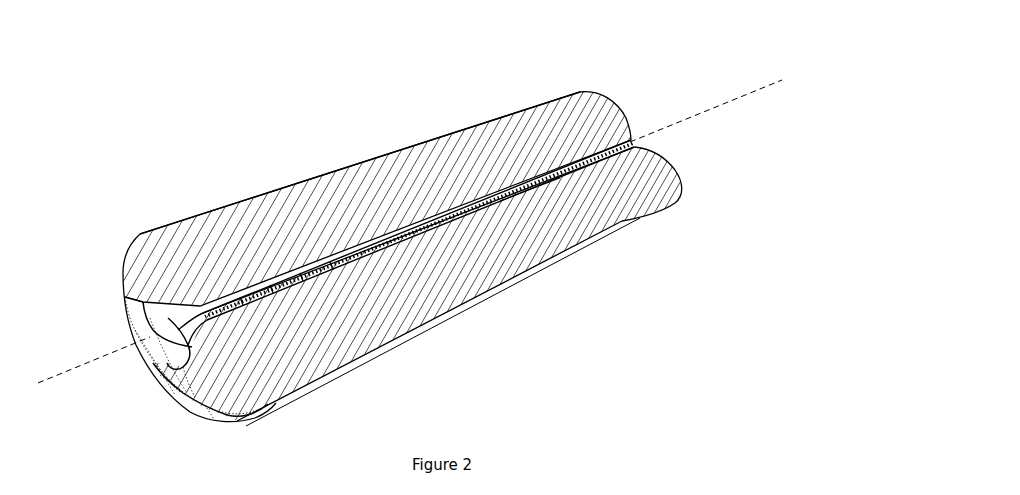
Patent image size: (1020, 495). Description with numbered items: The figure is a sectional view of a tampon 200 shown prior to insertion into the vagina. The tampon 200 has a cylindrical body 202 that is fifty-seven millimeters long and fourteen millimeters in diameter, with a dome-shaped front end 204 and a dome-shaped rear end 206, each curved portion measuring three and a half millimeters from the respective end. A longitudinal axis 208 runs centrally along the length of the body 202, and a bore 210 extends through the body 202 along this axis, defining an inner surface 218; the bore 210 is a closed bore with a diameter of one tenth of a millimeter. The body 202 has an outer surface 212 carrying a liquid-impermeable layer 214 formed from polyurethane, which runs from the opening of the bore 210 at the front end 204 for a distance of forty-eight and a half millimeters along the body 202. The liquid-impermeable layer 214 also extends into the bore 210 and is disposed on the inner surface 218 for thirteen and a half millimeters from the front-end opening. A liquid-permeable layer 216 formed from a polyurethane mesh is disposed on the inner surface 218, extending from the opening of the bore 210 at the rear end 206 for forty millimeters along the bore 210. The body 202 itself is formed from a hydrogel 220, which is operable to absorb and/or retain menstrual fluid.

The tampon 200 is at (395, 137).
The body 202 is at (630, 221).
The front end 204 is at (165, 373).
The rear end 206 is at (636, 141).
The longitudinal axis 208 is at (752, 90).
The bore 210 is at (143, 303).
The outer surface 212 is at (265, 193).
The liquid-impermeable layer 214 is at (347, 369).
The liquid-permeable layer 216 is at (533, 189).
The inner surface 218 is at (413, 232).
The hydrogel 220 is at (468, 157).